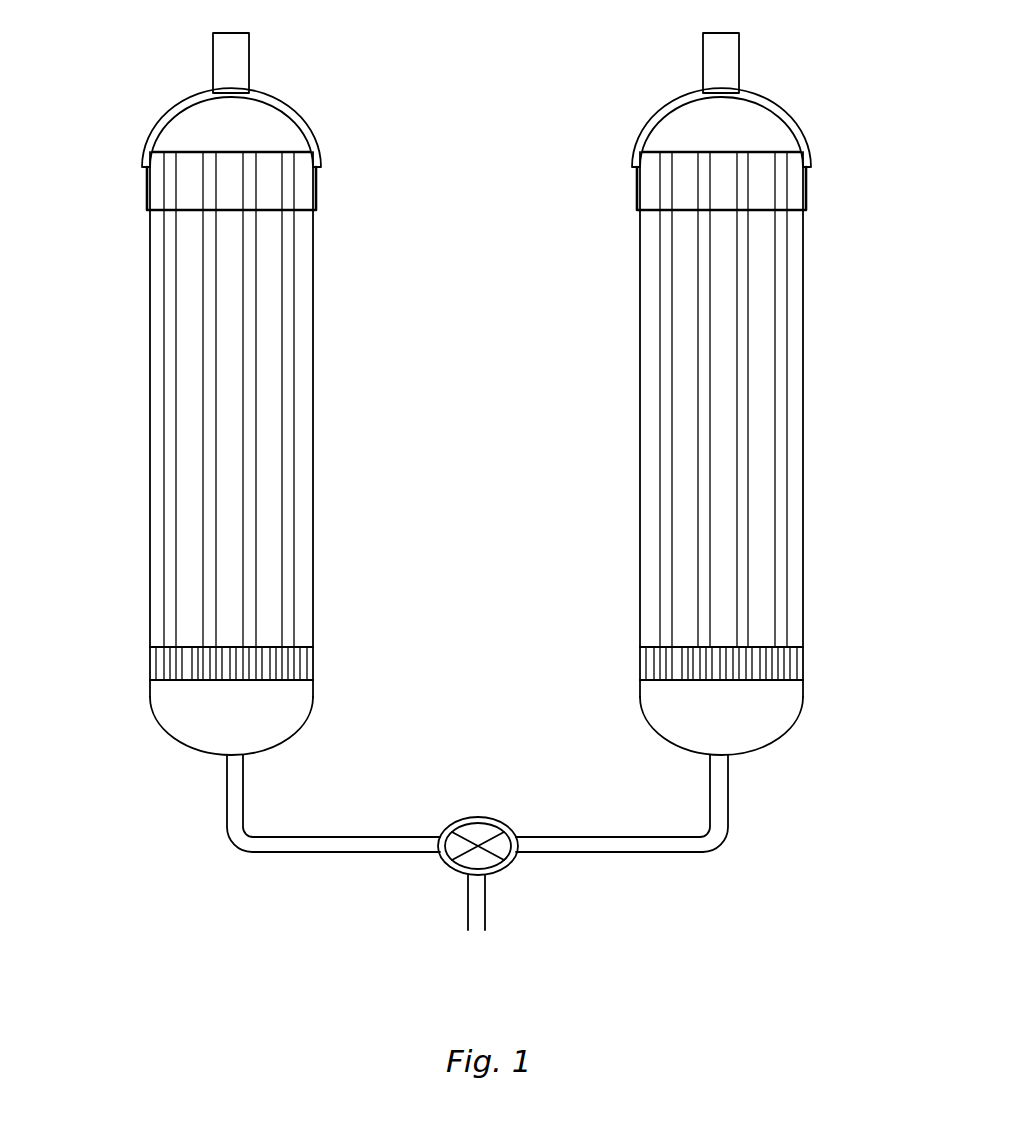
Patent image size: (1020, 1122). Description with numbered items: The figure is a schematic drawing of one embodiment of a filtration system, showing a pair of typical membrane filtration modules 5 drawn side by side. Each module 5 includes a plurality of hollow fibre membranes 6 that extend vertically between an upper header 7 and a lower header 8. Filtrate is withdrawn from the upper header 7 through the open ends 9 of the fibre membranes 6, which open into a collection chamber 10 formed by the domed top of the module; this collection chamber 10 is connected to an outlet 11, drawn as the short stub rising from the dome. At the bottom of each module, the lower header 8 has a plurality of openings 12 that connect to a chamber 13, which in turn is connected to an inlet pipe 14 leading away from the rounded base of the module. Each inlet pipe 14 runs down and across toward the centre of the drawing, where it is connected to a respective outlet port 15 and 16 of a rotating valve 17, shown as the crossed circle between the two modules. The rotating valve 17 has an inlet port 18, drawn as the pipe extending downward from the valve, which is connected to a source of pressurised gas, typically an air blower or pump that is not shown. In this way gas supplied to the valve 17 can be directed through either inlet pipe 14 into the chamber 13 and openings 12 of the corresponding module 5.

The membrane filtration module 5 is at (316, 401).
The hollow fibre membranes 6 is at (294, 258).
The upper header 7 is at (153, 192).
The lower header 8 is at (312, 662).
The open ends 9 is at (265, 150).
The collection chamber 10 is at (186, 130).
The outlet 11 is at (237, 66).
The openings 12 is at (190, 680).
The chamber 13 is at (197, 723).
The inlet pipe 14 is at (322, 843).
The outlet port 15 is at (432, 845).
The outlet port 16 is at (516, 855).
The rotating valve 17 is at (485, 818).
The inlet port 18 is at (475, 878).